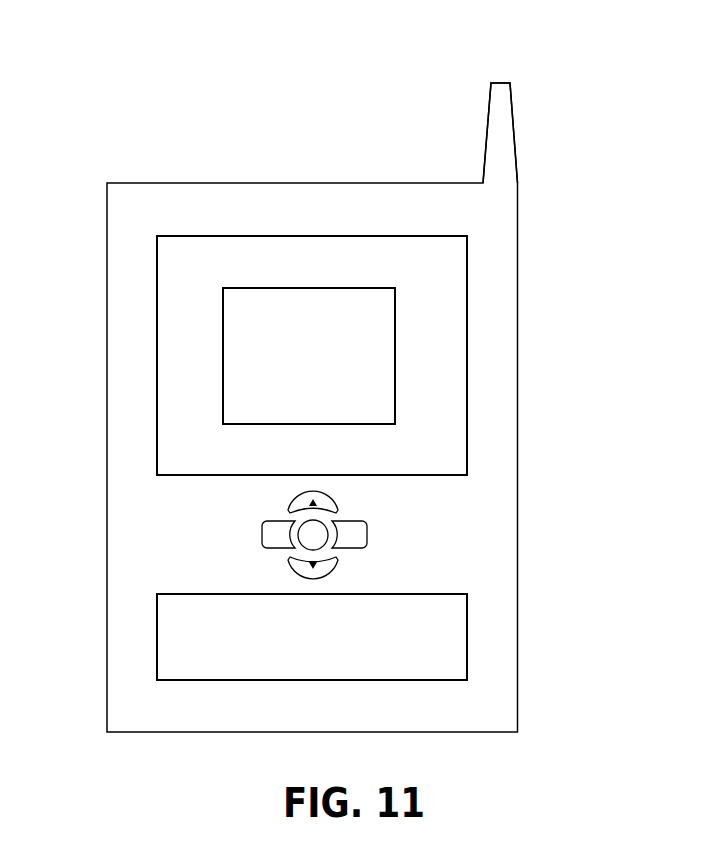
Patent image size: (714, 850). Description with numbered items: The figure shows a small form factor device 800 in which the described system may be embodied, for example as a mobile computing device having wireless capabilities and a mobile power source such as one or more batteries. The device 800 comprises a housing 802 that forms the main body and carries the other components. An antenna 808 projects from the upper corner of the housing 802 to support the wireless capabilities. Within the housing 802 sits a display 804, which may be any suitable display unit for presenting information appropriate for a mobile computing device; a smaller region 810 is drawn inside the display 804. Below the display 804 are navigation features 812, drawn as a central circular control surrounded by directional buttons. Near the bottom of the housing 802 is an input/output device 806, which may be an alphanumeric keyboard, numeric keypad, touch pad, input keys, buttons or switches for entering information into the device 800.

The small form factor device 800 is at (122, 101).
The housing 802 is at (518, 458).
The display 804 is at (467, 252).
The input/output (I/O) device 806 is at (467, 629).
The antenna 808 is at (488, 127).
The display window / image region 810 is at (395, 373).
The navigation features 812 is at (378, 527).